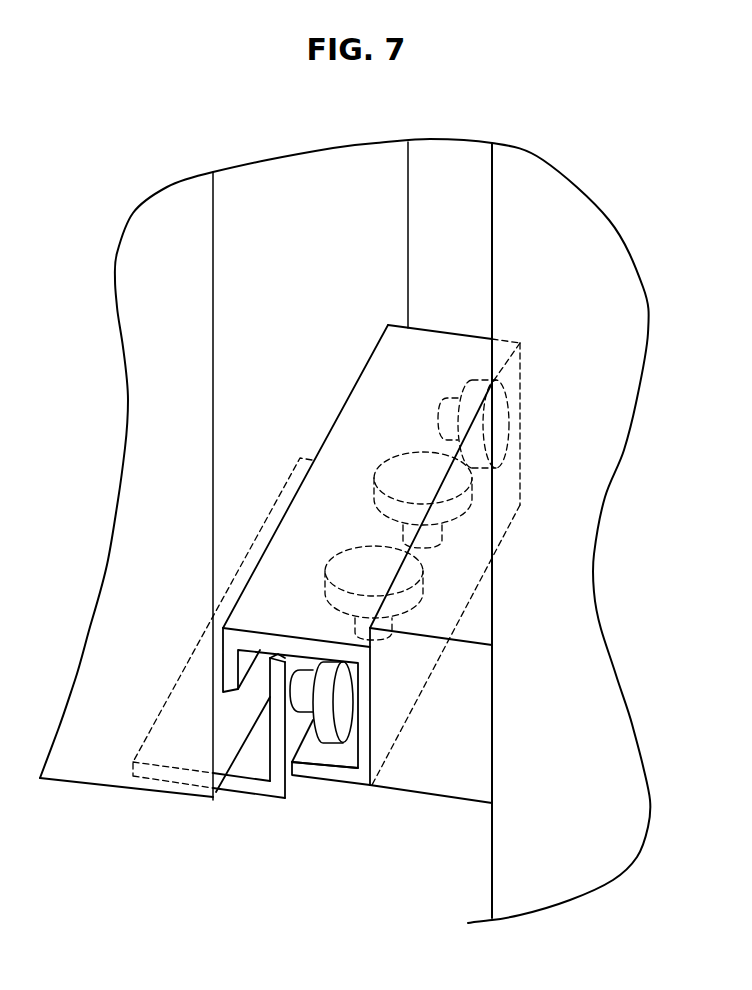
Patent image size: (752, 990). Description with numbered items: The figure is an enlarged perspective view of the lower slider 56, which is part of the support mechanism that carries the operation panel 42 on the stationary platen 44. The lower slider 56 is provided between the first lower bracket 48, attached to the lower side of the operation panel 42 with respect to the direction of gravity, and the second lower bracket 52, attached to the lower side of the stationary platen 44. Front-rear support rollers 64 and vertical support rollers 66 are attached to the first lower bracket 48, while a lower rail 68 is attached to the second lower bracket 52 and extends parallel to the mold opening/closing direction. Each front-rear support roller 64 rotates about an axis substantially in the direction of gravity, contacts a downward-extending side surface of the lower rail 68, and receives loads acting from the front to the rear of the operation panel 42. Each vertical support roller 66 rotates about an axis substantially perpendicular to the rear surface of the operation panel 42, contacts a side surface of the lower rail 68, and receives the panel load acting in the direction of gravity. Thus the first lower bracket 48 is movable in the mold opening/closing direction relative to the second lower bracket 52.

The operation panel 42 is at (98, 746).
The stationary platen 44 is at (575, 633).
The first lower bracket 48 is at (237, 787).
The second lower bracket 52 is at (437, 773).
The lower slider 56 is at (434, 318).
The front-rear support roller 64 is at (368, 565).
The vertical support roller 66 is at (332, 735).
The lower rail 68 is at (356, 778).